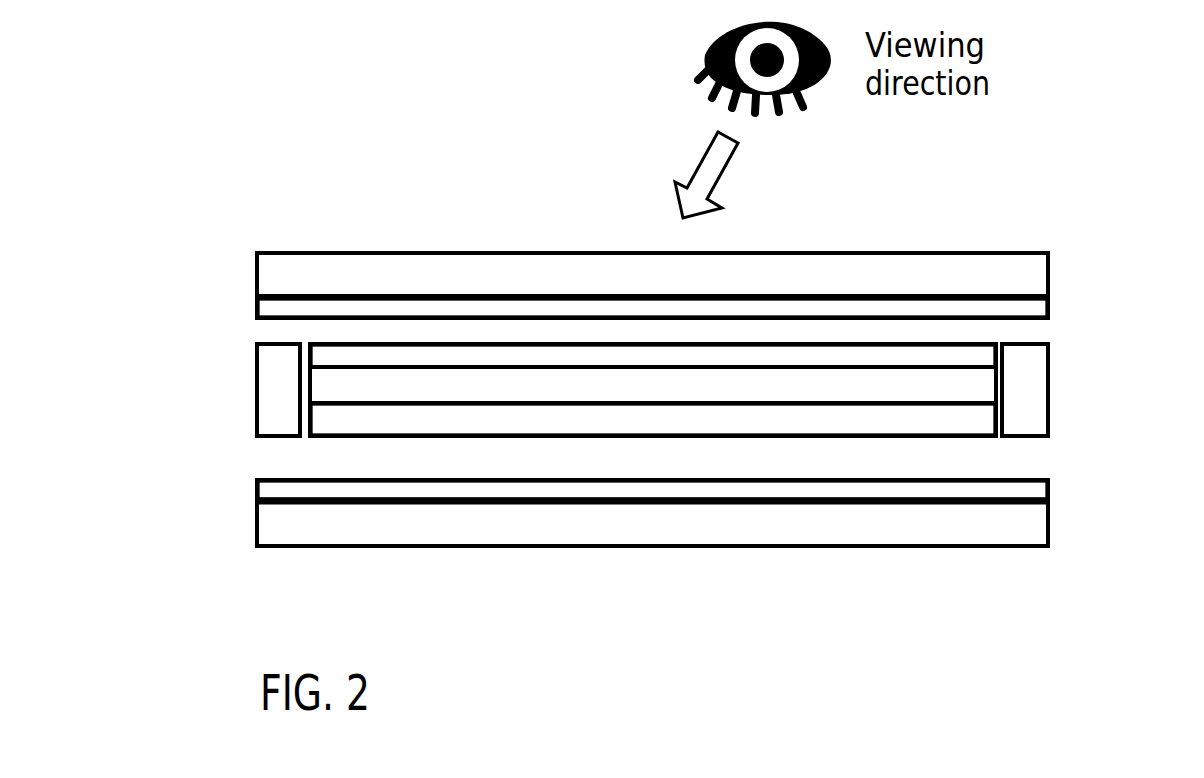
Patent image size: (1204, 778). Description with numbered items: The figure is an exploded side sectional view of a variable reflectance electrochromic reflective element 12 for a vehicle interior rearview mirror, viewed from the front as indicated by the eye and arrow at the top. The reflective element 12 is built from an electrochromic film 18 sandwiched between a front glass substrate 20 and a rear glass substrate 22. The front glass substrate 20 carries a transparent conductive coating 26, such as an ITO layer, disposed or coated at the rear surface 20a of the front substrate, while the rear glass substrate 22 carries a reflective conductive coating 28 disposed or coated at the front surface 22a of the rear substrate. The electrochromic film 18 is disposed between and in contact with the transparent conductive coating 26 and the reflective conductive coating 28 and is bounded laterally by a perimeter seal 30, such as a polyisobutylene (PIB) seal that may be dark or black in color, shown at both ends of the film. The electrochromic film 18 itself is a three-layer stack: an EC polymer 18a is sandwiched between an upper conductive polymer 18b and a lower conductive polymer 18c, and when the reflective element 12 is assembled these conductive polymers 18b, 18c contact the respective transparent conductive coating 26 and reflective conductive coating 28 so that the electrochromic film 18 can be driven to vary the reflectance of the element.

The reflective element 12 is at (1070, 131).
The electrochromic film 18 is at (1062, 338).
The EC polymer 18a is at (893, 395).
The conductive polymer 18b is at (980, 355).
The conductive polymer 18c is at (872, 423).
The front glass substrate 20 is at (458, 268).
The rear surface of the front substrate 20a is at (565, 296).
The rear glass substrate 22 is at (803, 537).
The front surface of the rear substrate 22a is at (913, 505).
The transparent conductive coating 26 is at (270, 309).
The reflective conductive coating 28 is at (272, 487).
The perimeter seal 30 is at (278, 365).